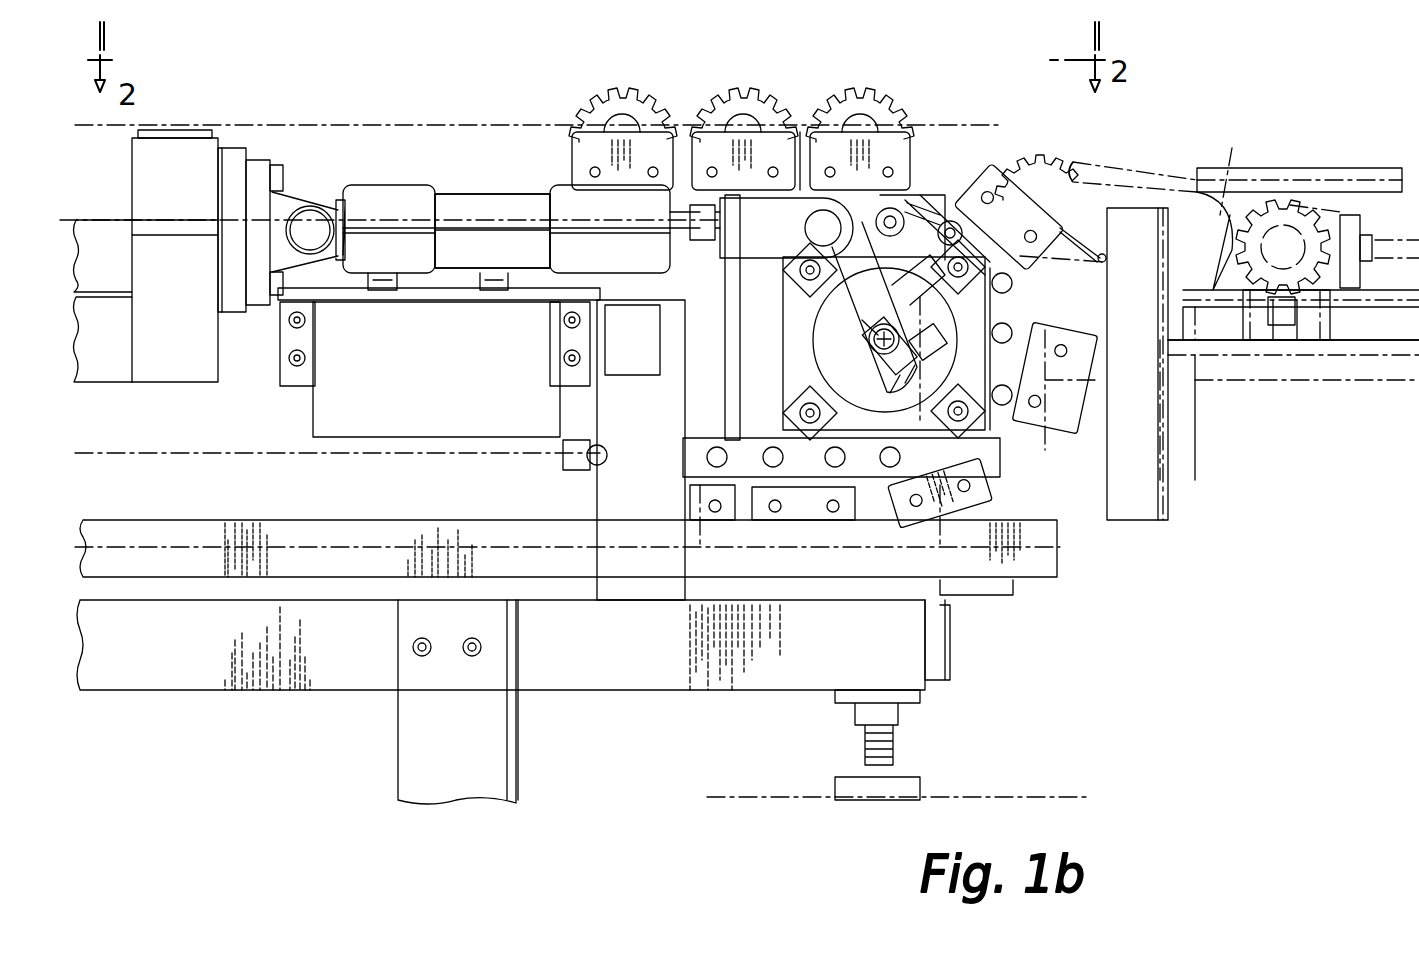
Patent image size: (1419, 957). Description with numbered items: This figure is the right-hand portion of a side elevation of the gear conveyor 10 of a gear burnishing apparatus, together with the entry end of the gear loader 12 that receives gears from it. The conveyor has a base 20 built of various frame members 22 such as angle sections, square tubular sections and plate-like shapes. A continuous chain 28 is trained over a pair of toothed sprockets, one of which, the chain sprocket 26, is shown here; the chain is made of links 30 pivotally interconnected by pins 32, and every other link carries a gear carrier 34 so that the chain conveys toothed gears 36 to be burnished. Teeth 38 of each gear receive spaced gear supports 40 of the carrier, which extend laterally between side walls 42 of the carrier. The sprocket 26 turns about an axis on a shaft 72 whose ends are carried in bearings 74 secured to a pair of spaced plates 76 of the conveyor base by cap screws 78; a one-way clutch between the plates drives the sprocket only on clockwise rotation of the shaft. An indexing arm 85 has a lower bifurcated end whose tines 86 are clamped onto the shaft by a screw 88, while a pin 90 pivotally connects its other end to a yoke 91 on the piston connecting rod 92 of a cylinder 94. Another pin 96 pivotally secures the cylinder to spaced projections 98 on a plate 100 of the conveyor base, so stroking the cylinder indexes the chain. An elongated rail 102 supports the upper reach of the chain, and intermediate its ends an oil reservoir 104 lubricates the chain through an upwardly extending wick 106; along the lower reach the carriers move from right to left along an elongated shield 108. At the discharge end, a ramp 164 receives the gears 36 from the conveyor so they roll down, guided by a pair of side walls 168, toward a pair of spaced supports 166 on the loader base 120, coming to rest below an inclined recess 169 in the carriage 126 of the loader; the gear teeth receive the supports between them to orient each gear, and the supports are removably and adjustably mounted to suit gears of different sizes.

The conveyor 10 is at (1218, 115).
The gear loader 12 is at (1330, 385).
The base 20 is at (975, 622).
The frame members 22 is at (598, 510).
The chain sprocket 26 is at (900, 196).
The continuous chain 28 is at (905, 216).
The links 30 is at (712, 470).
The pins 32 is at (772, 446).
The gear carrier 34 is at (682, 128).
The toothed gears 36 is at (748, 96).
The teeth 38 is at (722, 110).
The gear supports 40 is at (712, 177).
The side walls 42 is at (800, 130).
The shaft 72 is at (870, 345).
The bearings 74 is at (815, 320).
The spaced plates 76 is at (992, 300).
The cap screws 78 is at (800, 277).
The indexing arm 85 is at (908, 290).
The tines 86 is at (908, 385).
The screw 88 is at (920, 330).
The pin 90 is at (830, 247).
The yoke 91 is at (738, 300).
The piston connecting rod 92 is at (698, 250).
The cylinder 94 is at (486, 195).
The pin 96 is at (305, 212).
The spaced projections 98 is at (290, 260).
The plate 100 is at (245, 165).
The elongated rail 102 is at (95, 240).
The oil reservoir 104 is at (442, 440).
The wick 106 is at (458, 276).
The elongated shield 108 is at (915, 568).
The loader base 120 is at (1365, 380).
The carriage 126 is at (1370, 168).
The ramp 164 is at (1108, 262).
The spaced supports 166 is at (1312, 300).
The side walls 168 is at (1150, 168).
The inclined recess 169 is at (1230, 180).